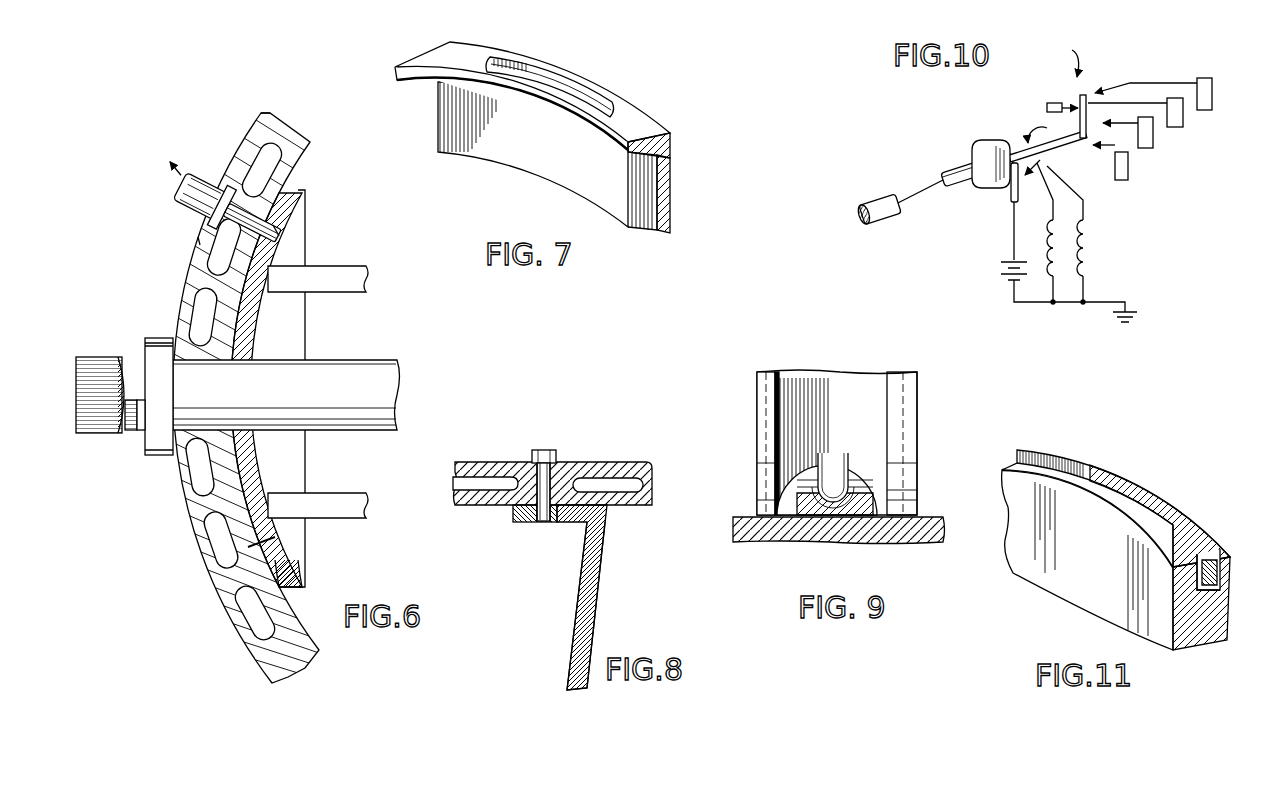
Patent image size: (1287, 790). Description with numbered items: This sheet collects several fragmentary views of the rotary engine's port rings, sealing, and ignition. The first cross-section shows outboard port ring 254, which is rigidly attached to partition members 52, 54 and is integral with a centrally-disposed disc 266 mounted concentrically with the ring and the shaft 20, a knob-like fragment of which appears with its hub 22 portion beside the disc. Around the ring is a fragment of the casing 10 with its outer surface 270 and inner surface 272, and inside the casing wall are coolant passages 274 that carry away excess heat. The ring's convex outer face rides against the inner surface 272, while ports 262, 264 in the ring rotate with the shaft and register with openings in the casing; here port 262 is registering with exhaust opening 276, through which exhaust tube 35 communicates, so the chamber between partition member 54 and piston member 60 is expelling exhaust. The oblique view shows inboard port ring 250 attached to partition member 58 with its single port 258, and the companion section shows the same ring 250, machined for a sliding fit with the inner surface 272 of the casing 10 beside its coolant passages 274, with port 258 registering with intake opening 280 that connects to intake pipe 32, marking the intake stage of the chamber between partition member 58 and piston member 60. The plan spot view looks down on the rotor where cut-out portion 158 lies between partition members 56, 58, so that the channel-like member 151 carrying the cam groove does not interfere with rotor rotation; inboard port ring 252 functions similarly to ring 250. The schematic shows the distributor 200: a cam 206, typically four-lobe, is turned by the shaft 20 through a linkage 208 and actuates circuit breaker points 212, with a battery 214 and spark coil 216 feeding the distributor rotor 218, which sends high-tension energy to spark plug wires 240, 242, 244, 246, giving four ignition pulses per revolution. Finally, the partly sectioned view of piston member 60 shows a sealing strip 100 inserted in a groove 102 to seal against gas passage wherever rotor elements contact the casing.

In FIG. 6, the casing 10 is at (295, 160).
In FIG. 8, the casing 10 is at (482, 473).
In FIG. 9, the casing 10 is at (905, 540).
In FIG. 6, the shaft 20 is at (93, 366).
In FIG. 10, the shaft 20 is at (880, 222).
In FIG. 6, the hub 22 is at (160, 447).
In FIG. 8, the intake pipe 32 is at (547, 455).
In FIG. 6, the exhaust tube 35 is at (190, 208).
In FIG. 6, the partition member 52 is at (343, 512).
In FIG. 6, the partition member 54 is at (333, 290).
In FIG. 9, the partition member 56 is at (910, 475).
In FIG. 7, the partition member 58 is at (540, 165).
In FIG. 8, the partition member 58 is at (580, 620).
In FIG. 9, the partition member 58 is at (770, 478).
In FIG. 11, the piston member 60 is at (1088, 559).
In FIG. 11, the sealing strip 100 is at (1173, 523).
In FIG. 11, the groove 102 is at (1222, 598).
In FIG. 9, the channel-like member 151 is at (870, 503).
In FIG. 9, the cut-out portion 158 is at (855, 462).
In FIG. 10, the distributor 200 is at (1055, 59).
In FIG. 10, the cam 206 is at (983, 157).
In FIG. 10, the linkage 208 is at (930, 162).
In FIG. 10, the circuit breaker points 212 is at (1010, 198).
In FIG. 10, the battery 214 is at (1000, 280).
In FIG. 10, the spark coil 216 is at (1090, 250).
In FIG. 10, the distributor rotor 218 is at (1083, 127).
In FIG. 10, the spark plug wire 240 is at (1127, 178).
In FIG. 10, the spark plug wire 242 is at (1220, 67).
In FIG. 10, the spark plug wire 244 is at (1155, 147).
In FIG. 10, the spark plug wire 246 is at (1175, 98).
In FIG. 7, the inboard port ring 250 is at (452, 60).
In FIG. 8, the inboard port ring 250 is at (520, 517).
In FIG. 9, the inboard port ring 250 is at (762, 500).
In FIG. 9, the inboard port ring 252 is at (905, 400).
In FIG. 6, the outboard port ring 254 is at (290, 207).
In FIG. 7, the port 258 is at (585, 90).
In FIG. 8, the port 258 is at (545, 520).
In FIG. 6, the port 262 is at (279, 228).
In FIG. 6, the port 264 is at (222, 578).
In FIG. 6, the disc 266 is at (257, 353).
In FIG. 6, the outer surface 270 is at (260, 128).
In FIG. 6, the inner surface 272 is at (298, 180).
In FIG. 8, the inner surface 272 is at (615, 520).
In FIG. 6, the coolant passages 274 is at (268, 162).
In FIG. 8, the coolant passages 274 is at (478, 490).
In FIG. 6, the exhaust opening 276 is at (200, 242).
In FIG. 8, the intake opening 280 is at (548, 488).